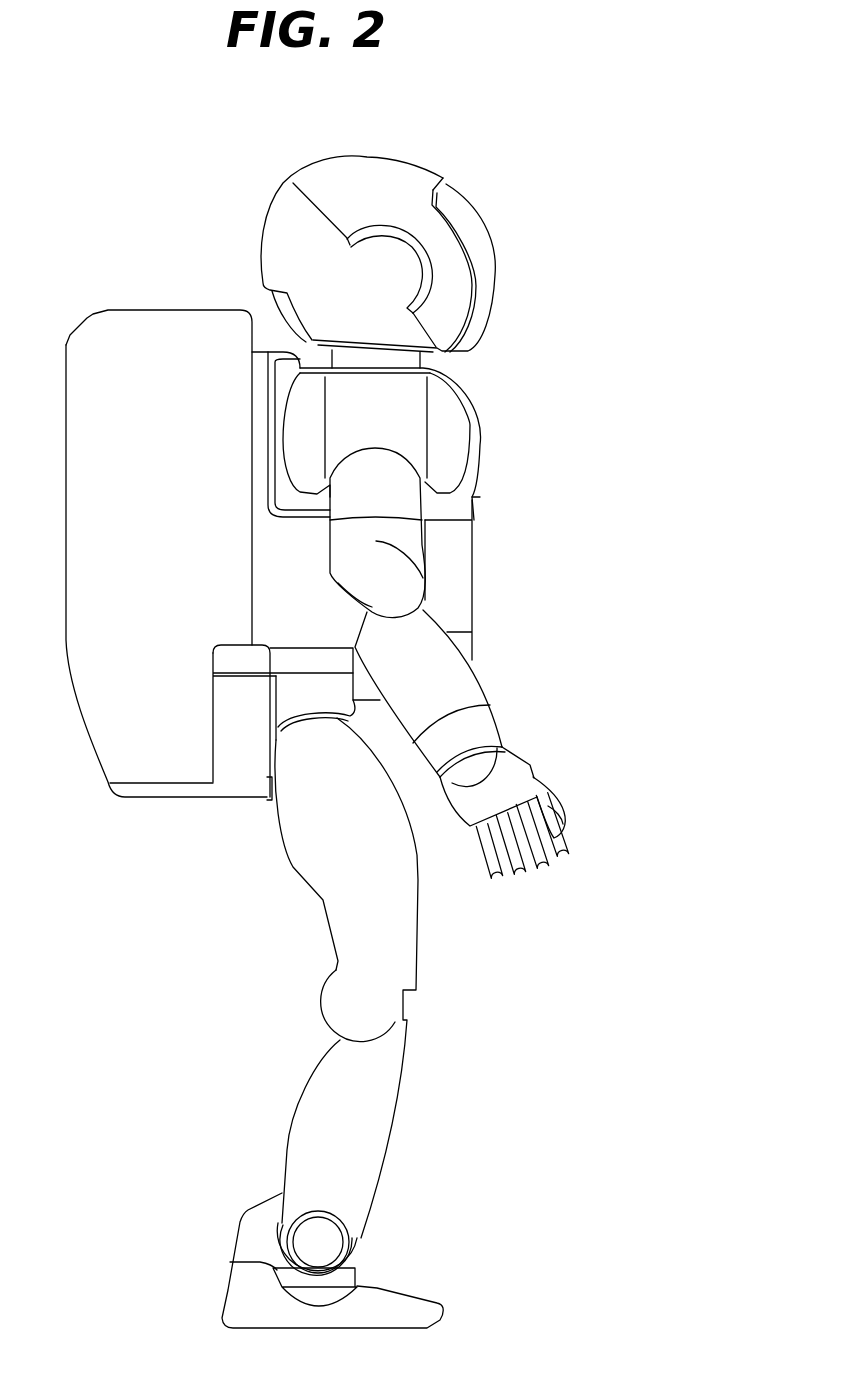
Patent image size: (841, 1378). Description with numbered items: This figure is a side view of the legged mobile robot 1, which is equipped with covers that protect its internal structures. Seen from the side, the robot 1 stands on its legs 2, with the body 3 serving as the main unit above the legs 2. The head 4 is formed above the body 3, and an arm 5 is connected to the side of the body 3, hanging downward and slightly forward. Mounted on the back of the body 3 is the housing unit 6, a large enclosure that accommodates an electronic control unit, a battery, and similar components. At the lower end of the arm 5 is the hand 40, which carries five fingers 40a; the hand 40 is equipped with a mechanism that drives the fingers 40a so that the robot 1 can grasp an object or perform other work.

The legged mobile robot 1 is at (528, 427).
The leg 2 is at (438, 1010).
The body 3 is at (458, 577).
The head 4 is at (332, 160).
The arm 5 is at (497, 690).
The housing unit 6 is at (127, 308).
The hand 40 is at (532, 765).
The finger 40a is at (568, 843).